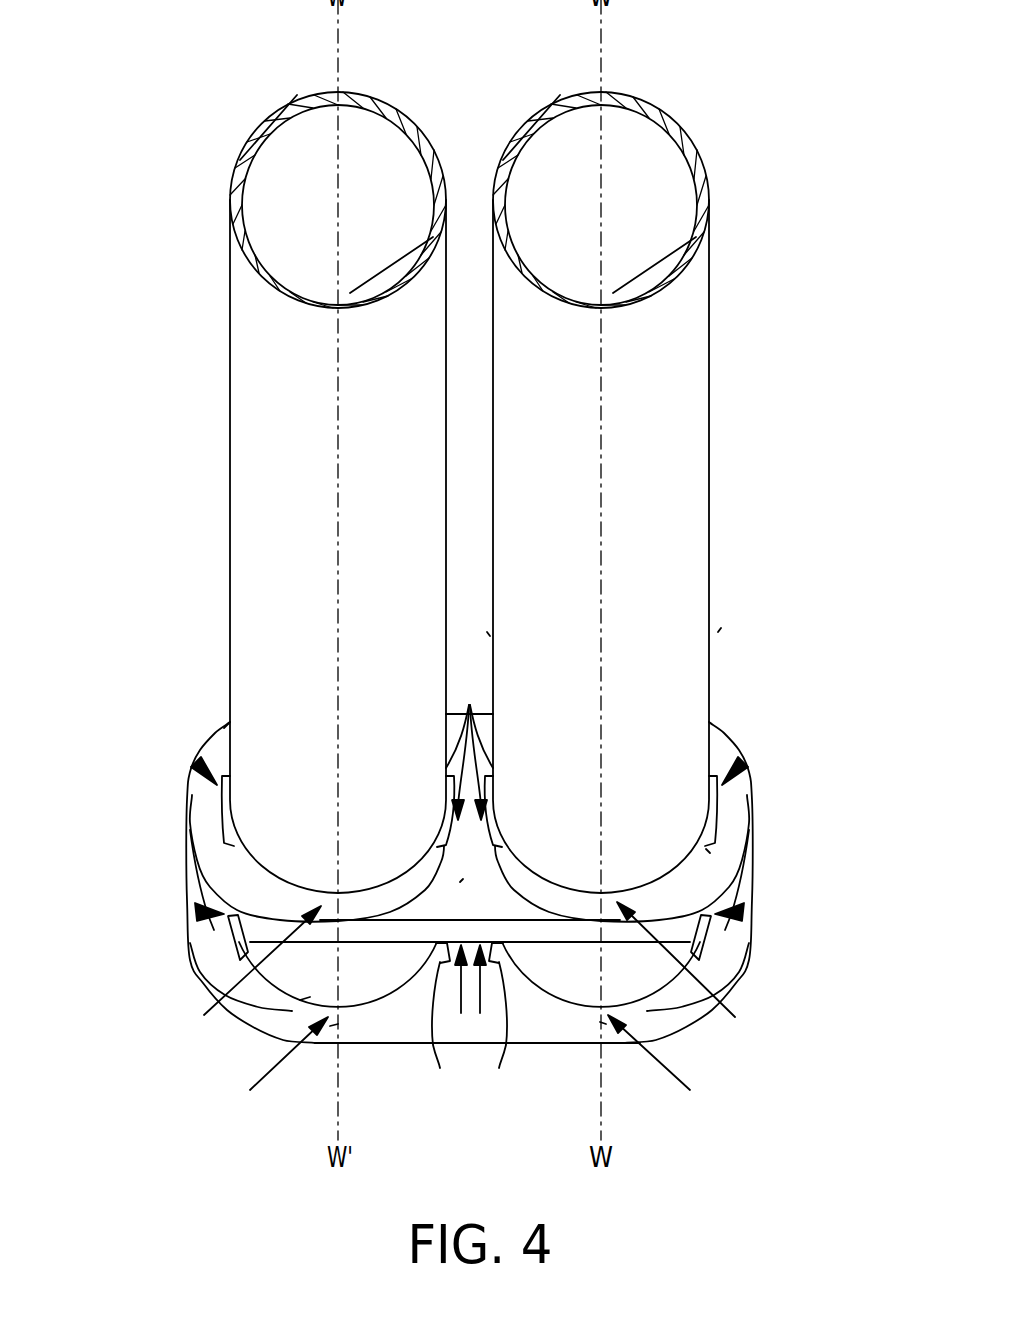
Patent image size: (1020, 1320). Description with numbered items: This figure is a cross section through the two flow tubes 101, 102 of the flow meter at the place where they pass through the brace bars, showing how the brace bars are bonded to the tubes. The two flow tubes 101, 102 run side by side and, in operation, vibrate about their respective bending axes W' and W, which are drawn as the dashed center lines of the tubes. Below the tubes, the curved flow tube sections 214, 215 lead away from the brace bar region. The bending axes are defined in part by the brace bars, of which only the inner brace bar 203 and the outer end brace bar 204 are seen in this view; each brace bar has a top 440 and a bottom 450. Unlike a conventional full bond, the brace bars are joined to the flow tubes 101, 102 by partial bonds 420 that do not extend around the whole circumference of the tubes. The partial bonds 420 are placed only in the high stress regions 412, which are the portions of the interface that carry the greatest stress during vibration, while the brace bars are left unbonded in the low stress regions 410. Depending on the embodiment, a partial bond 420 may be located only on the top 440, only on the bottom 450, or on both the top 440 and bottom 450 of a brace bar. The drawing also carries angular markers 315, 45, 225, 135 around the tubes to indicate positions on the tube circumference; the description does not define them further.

The flow tube 101 is at (248, 464).
The flow tube 102 is at (691, 464).
The inner brace bar 203 is at (722, 740).
The outer end brace bar 204 is at (655, 1028).
The curved flow tube section 214 is at (338, 1024).
The curved flow tube section 215 is at (601, 1023).
The low stress region 410 is at (472, 1012).
The high stress region 412 is at (197, 760).
The partial bond 420 is at (470, 714).
The top of brace bar 440 is at (742, 812).
The bottom of brace bar 450 is at (300, 1000).
The 315 degree position 315 is at (487, 632).
The 45 degree position 45 is at (721, 628).
The 225 degree position 225 is at (460, 882).
The 135 degree position 135 is at (710, 853).